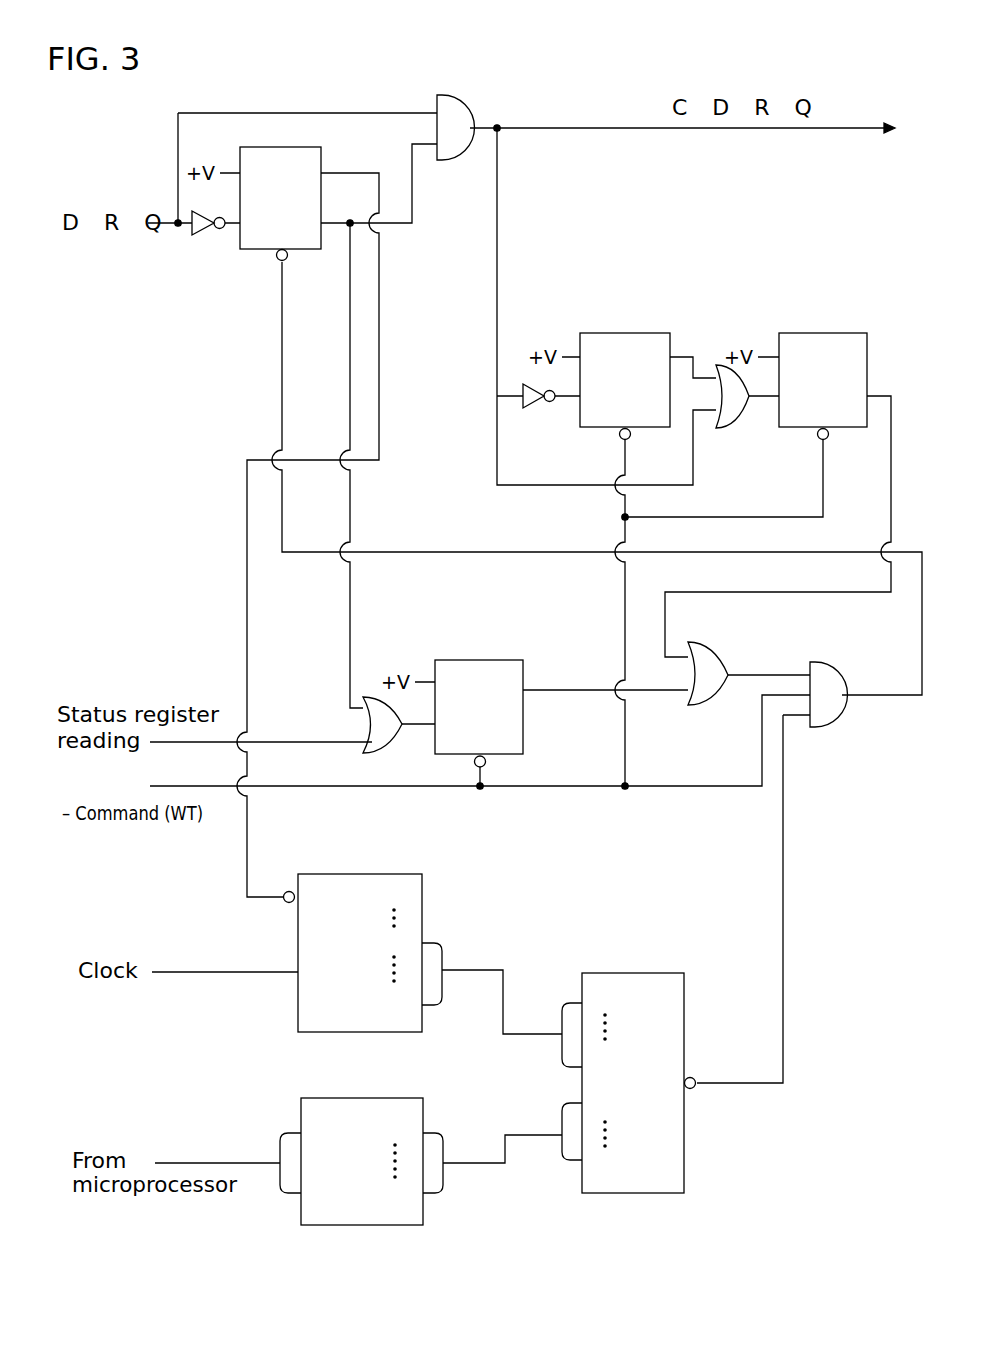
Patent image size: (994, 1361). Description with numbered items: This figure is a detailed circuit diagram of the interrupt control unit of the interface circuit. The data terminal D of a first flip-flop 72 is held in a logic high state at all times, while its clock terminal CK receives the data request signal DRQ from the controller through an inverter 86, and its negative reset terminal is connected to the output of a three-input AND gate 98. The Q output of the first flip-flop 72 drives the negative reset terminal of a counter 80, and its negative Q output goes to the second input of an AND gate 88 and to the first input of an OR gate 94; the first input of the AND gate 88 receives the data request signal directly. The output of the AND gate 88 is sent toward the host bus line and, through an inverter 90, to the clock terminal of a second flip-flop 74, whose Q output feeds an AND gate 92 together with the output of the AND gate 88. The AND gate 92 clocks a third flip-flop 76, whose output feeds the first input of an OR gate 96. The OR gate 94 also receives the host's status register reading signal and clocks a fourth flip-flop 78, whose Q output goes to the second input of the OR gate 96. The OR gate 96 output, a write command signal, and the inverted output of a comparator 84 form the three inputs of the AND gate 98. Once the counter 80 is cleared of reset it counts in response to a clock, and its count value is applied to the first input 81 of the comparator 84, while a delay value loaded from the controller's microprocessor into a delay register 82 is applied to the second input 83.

The first flip-flop 72 is at (321, 157).
The second flip-flop 74 is at (640, 333).
The third flip-flop 76 is at (832, 332).
The fourth flip-flop 78 is at (503, 660).
The counter 80 is at (395, 874).
The first input 81 is at (557, 1027).
The delay register 82 is at (370, 1098).
The second input 83 is at (557, 1143).
The comparator 84 is at (652, 973).
The inverter 86 is at (203, 230).
The AND gate 88 is at (463, 108).
The inverter 90 is at (533, 403).
The AND gate 92 is at (742, 420).
The OR gate 94 is at (367, 697).
The OR gate 96 is at (723, 653).
The 3-input AND gate 98 is at (830, 667).